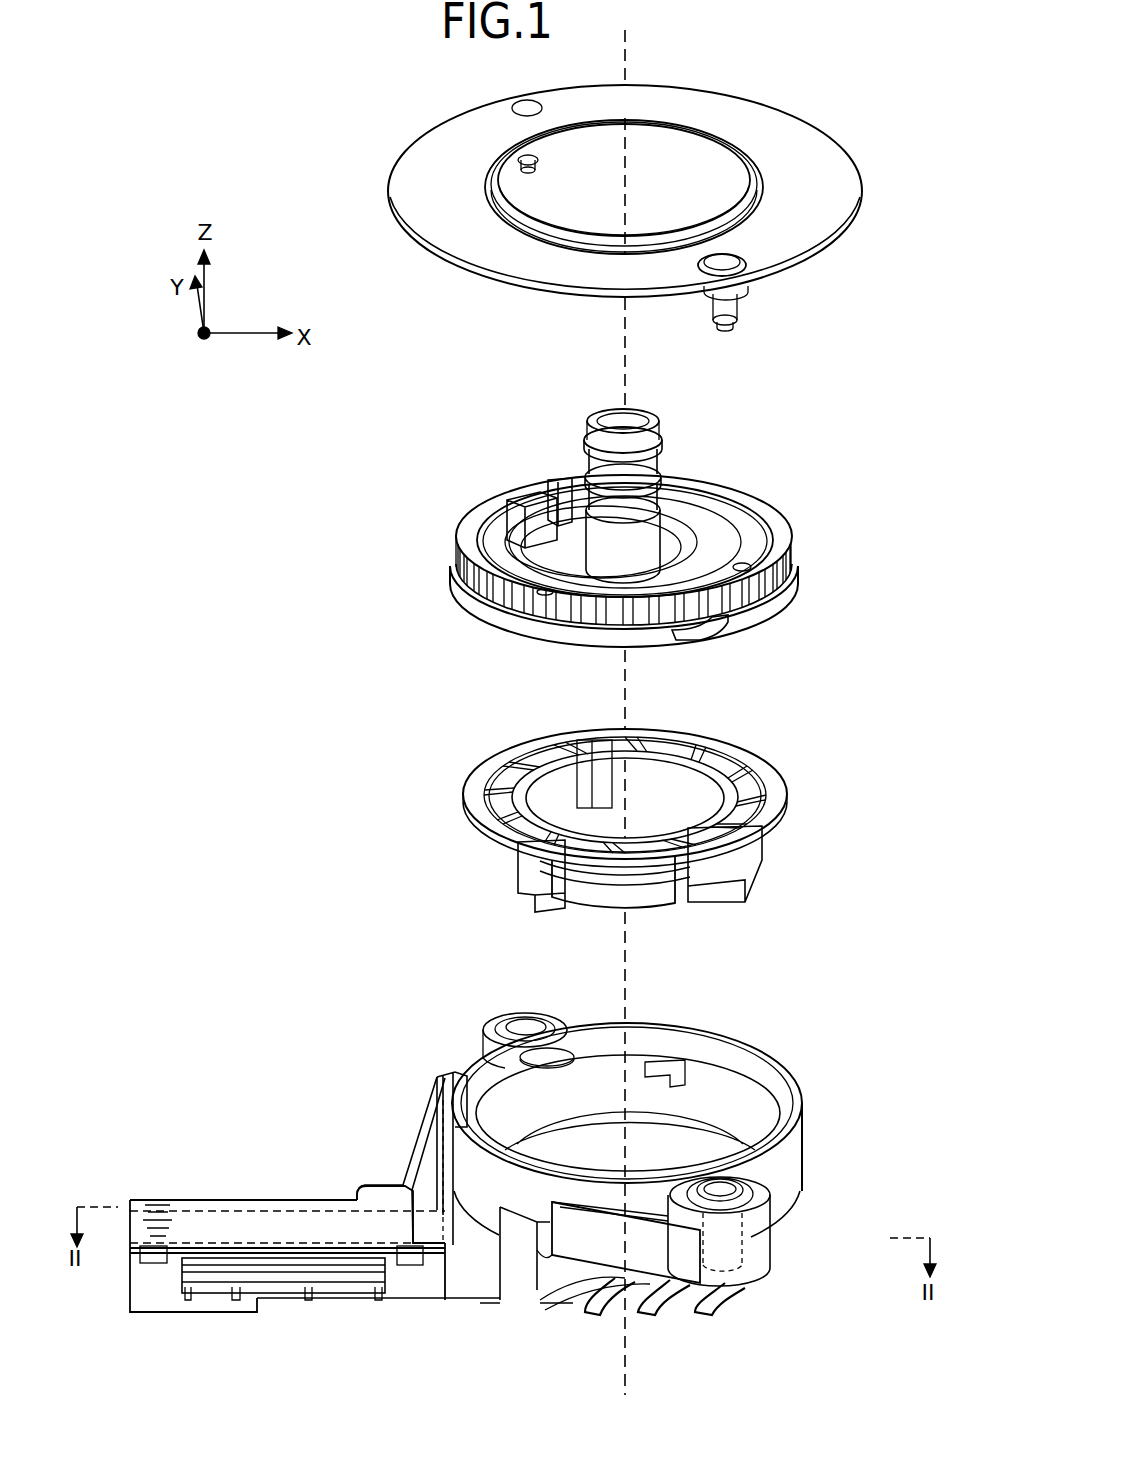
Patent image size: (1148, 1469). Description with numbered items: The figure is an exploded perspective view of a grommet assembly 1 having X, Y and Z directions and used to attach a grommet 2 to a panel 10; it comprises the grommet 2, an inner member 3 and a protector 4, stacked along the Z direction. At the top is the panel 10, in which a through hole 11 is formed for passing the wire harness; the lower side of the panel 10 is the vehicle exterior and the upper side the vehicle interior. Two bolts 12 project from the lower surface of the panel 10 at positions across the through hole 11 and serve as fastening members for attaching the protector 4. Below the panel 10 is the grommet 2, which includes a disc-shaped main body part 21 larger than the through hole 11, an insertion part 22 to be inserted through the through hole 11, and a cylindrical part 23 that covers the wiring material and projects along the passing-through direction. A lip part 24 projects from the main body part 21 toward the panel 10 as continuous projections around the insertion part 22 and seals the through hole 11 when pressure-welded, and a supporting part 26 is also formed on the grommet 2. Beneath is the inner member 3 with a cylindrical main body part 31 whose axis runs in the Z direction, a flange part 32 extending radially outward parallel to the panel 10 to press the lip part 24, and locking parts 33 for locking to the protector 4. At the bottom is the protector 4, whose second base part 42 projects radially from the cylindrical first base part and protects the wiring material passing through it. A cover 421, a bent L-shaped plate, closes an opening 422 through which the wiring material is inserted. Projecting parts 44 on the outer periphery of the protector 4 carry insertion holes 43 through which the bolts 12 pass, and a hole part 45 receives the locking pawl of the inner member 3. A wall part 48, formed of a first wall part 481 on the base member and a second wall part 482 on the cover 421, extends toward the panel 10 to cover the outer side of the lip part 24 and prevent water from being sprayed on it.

The grommet assembly 1 is at (339, 91).
The panel 10 is at (782, 131).
The through hole 11 is at (667, 152).
The bolt 12 is at (539, 149).
The grommet 2 is at (791, 563).
The main body part 21 is at (466, 583).
The insertion part 22 is at (746, 528).
The cylindrical part 23 is at (588, 428).
The lip part 24 is at (459, 546).
The supporting part 26 is at (776, 601).
The inner member 3 is at (619, 839).
The main body part 31 is at (708, 882).
The flange part 32 is at (471, 798).
The locking part 33 is at (526, 878).
The protector 4 is at (500, 1168).
The second base part 42 is at (287, 1247).
The cover 421 is at (276, 1205).
The opening 422 is at (201, 1208).
The insertion hole 43 is at (733, 1286).
The projecting part 44 is at (488, 1025).
The hole part 45 is at (527, 1230).
The wall part 48 is at (397, 1103).
The first wall part 481 is at (600, 1028).
The second wall part 482 is at (521, 1108).